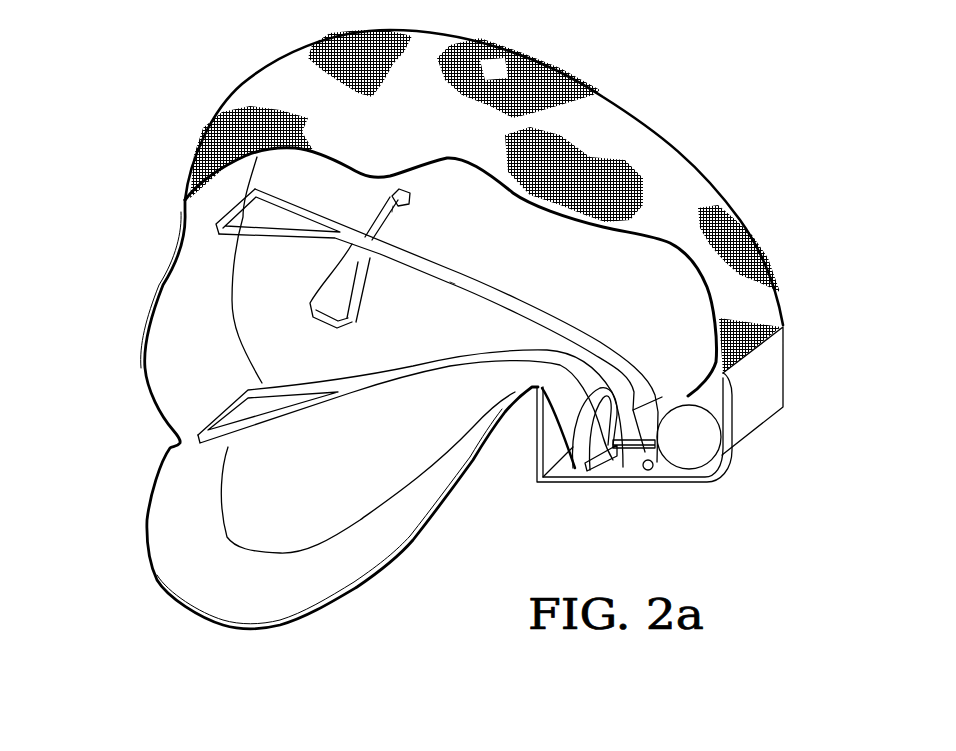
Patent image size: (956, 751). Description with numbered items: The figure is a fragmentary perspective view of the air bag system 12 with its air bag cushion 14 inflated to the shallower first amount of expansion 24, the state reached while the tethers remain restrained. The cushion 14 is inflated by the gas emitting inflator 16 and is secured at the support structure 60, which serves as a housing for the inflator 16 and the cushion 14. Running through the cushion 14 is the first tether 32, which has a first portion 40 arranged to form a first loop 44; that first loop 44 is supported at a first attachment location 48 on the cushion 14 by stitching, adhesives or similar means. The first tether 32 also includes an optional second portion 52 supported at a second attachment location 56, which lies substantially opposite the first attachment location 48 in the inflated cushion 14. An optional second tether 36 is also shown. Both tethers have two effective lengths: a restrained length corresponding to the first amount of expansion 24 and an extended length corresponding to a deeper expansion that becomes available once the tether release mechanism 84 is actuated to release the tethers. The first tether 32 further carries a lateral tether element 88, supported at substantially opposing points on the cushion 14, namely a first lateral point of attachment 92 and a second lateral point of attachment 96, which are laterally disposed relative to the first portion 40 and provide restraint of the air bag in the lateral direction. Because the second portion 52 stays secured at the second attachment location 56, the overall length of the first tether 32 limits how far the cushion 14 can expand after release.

The air bag system 12 is at (636, 84).
The air bag cushion 14 is at (290, 100).
The first amount of expansion 24 is at (148, 310).
The first portion 40 is at (395, 256).
The first attachment location 48 is at (232, 218).
The first tether 32 is at (450, 287).
The first loop 44 is at (312, 221).
The first lateral point of attachment 92 is at (340, 327).
The second lateral point of attachment 96 is at (410, 200).
The lateral tether element 88 is at (393, 228).
The second tether 36 is at (408, 382).
The support structure 60 is at (755, 392).
The second portion 52 is at (577, 467).
The second attachment location 56 is at (620, 463).
The tether release mechanism 84 is at (650, 471).
The inflator 16 is at (703, 455).